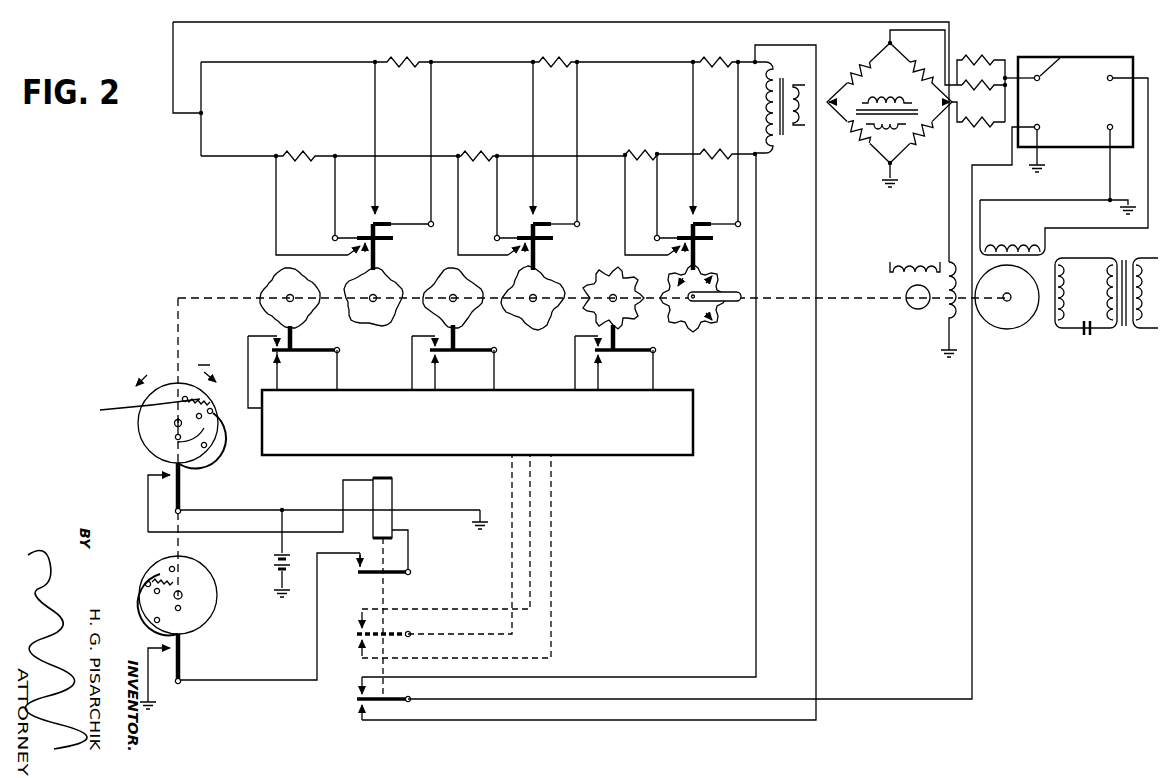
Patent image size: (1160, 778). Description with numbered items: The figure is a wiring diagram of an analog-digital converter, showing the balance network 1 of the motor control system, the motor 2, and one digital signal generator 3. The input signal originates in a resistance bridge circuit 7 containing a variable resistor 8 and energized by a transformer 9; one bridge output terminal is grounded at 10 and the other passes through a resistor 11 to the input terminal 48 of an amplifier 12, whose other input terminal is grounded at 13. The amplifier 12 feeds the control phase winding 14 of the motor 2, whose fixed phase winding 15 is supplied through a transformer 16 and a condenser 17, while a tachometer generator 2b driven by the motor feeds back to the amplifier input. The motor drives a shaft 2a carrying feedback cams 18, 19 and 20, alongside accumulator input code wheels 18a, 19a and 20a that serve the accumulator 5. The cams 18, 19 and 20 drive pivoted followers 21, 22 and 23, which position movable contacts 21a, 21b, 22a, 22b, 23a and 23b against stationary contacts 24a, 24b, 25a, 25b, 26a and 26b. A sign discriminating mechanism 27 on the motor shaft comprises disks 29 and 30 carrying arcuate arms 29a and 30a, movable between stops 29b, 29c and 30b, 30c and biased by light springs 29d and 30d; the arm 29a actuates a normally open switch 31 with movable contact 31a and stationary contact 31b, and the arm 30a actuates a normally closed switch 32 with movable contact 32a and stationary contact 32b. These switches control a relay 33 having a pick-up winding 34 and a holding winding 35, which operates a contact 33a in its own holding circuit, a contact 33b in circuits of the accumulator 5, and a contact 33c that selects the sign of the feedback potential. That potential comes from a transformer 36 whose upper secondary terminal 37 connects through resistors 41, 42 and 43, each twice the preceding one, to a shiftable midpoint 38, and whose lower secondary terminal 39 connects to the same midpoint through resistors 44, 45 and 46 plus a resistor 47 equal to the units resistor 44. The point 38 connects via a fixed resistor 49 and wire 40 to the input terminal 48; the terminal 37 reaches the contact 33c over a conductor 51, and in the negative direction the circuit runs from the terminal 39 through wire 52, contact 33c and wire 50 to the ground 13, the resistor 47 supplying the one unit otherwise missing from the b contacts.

The balance network 1 is at (1005, 50).
The motor 2 is at (1002, 322).
The shaft 2a is at (743, 295).
The tachometer generator 2b is at (913, 306).
The digital signal generator 3 is at (695, 337).
The accumulator 5 is at (322, 457).
The resistance bridge circuit 7 is at (897, 84).
The variable resistor 8 is at (925, 127).
The transformer 9 is at (845, 110).
The ground 10 is at (885, 183).
The resistor 11 is at (965, 56).
The amplifier 12 is at (1088, 60).
The ground 13 is at (1043, 167).
The control phase winding 14 is at (1020, 245).
The fixed phase winding 15 is at (1068, 282).
The transformer 16 is at (1125, 262).
The condenser 17 is at (1092, 334).
The feedback cam 18 is at (722, 318).
The accumulator input code wheel 18a is at (630, 322).
The feedback cam 19 is at (544, 325).
The accumulator input code wheel 19a is at (478, 322).
The feedback cam 20 is at (380, 327).
The accumulator input code wheel 20a is at (297, 325).
The follower 21 is at (698, 250).
The movable contact 21a is at (733, 228).
The movable contact 21b is at (671, 236).
The follower 22 is at (538, 250).
The movable contact 22a is at (573, 228).
The movable contact 22b is at (511, 236).
The follower 23 is at (378, 250).
The movable contact 23a is at (411, 228).
The movable contact 23b is at (351, 236).
The stationary contact 24a is at (697, 205).
The stationary contact 24b is at (675, 250).
The stationary contact 25a is at (537, 205).
The stationary contact 25b is at (515, 250).
The stationary contact 26a is at (377, 205).
The stationary contact 26b is at (355, 250).
The input signal sign discriminating mechanism 27 is at (120, 557).
The disk 29 is at (192, 399).
The arcuate arm 29a is at (210, 448).
The stop 29b is at (207, 418).
The stop 29c is at (175, 437).
The light spring 29d is at (132, 410).
The disk 30 is at (200, 570).
The arcuate arm 30a is at (148, 617).
The stop 30b is at (168, 565).
The stop 30c is at (182, 607).
The light spring 30d is at (166, 569).
The switch 31 is at (146, 468).
The movable contact 31a is at (183, 498).
The stationary contact 31b is at (147, 480).
The switch 32 is at (198, 637).
The movable contact 32a is at (183, 664).
The stationary contact 32b is at (148, 648).
The input signal sign discriminating relay 33 is at (417, 581).
The contact 33a is at (393, 575).
The contact 33b is at (393, 633).
The contact 33c is at (393, 699).
The pick-up winding 34 is at (394, 481).
The holding winding 35 is at (393, 521).
The transformer 36 is at (786, 80).
The upper secondary terminal 37 is at (755, 60).
The electrically shiftable midpoint 38 is at (205, 113).
The lower secondary terminal 39 is at (758, 156).
The wire 40 is at (315, 23).
The resistor 41 is at (710, 57).
The resistor 42 is at (556, 57).
The resistor 43 is at (404, 57).
The resistor 44 is at (637, 152).
The resistor 45 is at (477, 153).
The resistor 46 is at (312, 152).
The resistor 47 is at (716, 150).
The input terminal 48 is at (1062, 58).
The fixed resistor 49 is at (962, 92).
The wire 50 is at (972, 436).
The conductor 51 is at (816, 436).
The wire 52 is at (756, 646).